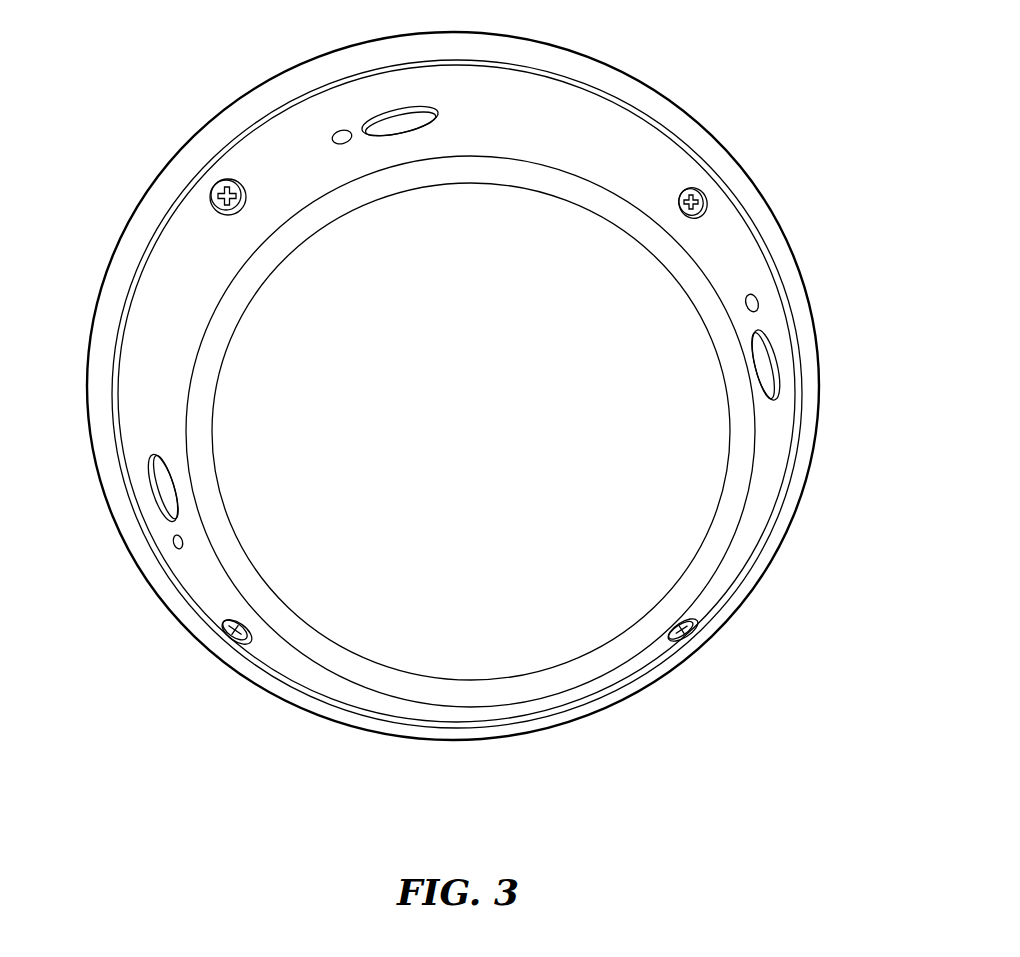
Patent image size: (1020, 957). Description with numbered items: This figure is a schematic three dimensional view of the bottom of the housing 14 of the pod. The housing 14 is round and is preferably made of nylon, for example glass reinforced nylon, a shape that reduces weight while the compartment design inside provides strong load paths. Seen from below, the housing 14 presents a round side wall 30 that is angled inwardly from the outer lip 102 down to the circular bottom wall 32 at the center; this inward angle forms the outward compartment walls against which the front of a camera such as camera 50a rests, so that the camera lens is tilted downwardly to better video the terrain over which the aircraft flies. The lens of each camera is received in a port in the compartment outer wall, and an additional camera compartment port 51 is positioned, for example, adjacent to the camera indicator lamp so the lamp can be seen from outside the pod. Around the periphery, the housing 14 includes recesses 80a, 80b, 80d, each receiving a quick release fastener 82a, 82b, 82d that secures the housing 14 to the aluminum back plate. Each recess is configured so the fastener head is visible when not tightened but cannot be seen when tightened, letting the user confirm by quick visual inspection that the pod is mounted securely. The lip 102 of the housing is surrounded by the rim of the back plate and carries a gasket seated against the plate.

The housing 14 is at (443, 652).
The round side wall 30 is at (737, 550).
The circular bottom wall 32 is at (444, 447).
The camera 50a is at (150, 505).
The camera compartment port 51 is at (757, 297).
The recess 80a is at (245, 188).
The recess 80b is at (698, 186).
The recess 80d is at (245, 628).
The quick release fastener 82a is at (209, 202).
The quick release fastener 82b is at (708, 204).
The quick release fastener 82d is at (231, 638).
The lip 102 is at (596, 128).